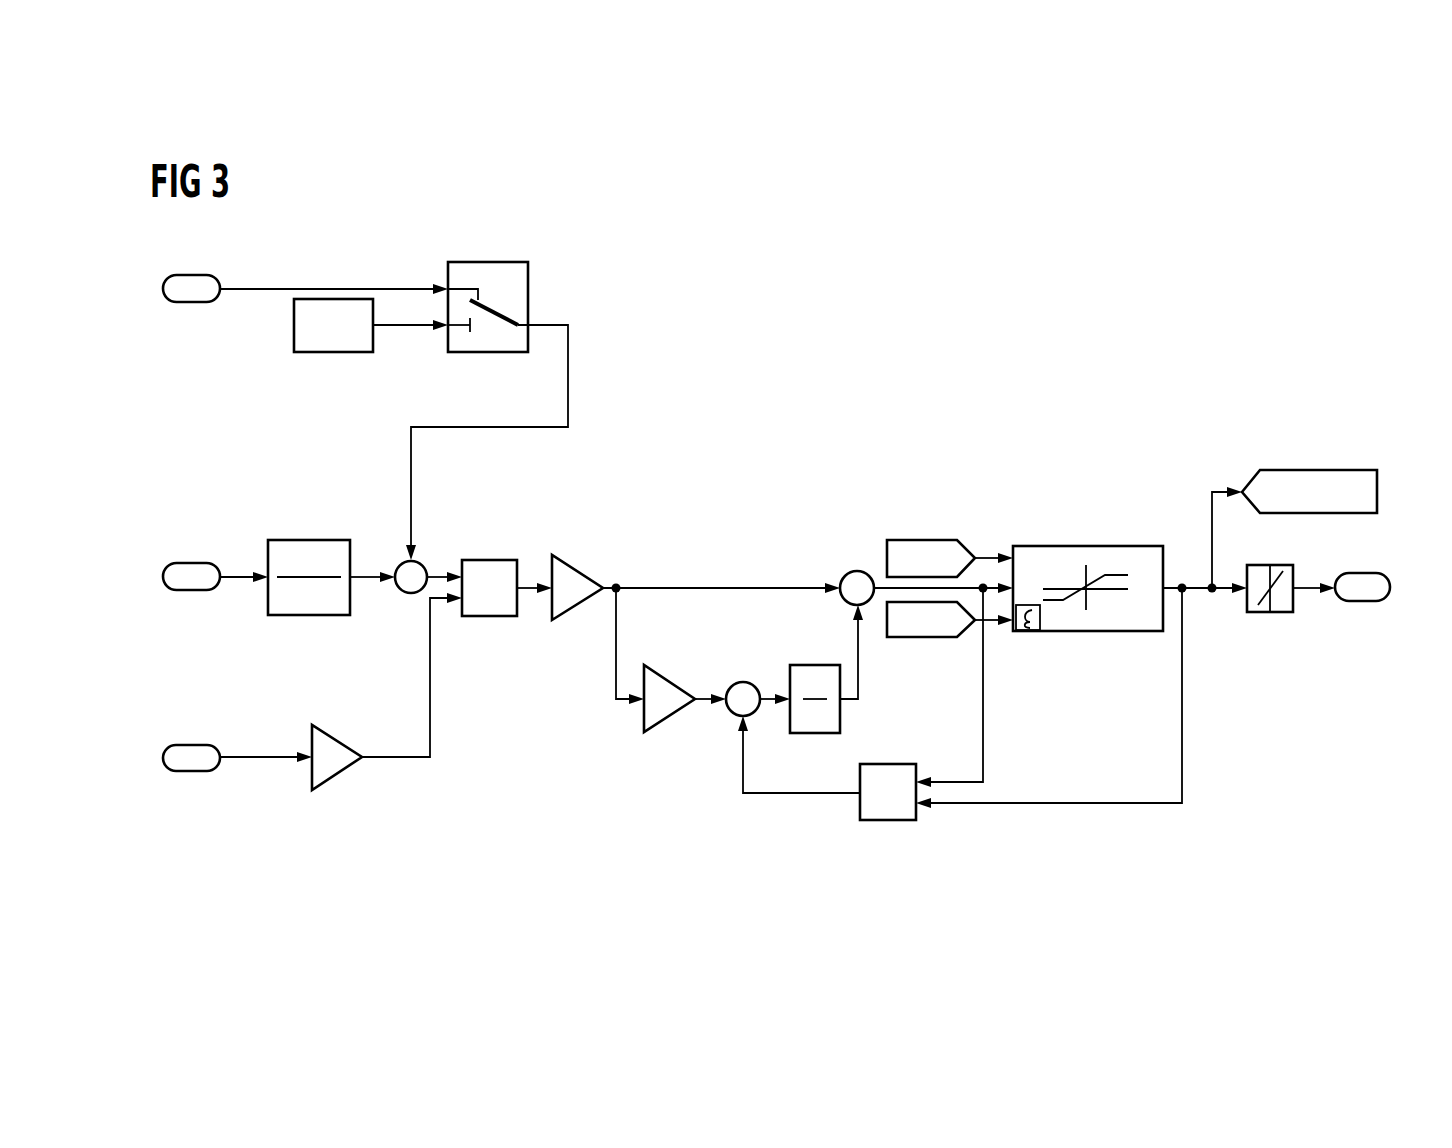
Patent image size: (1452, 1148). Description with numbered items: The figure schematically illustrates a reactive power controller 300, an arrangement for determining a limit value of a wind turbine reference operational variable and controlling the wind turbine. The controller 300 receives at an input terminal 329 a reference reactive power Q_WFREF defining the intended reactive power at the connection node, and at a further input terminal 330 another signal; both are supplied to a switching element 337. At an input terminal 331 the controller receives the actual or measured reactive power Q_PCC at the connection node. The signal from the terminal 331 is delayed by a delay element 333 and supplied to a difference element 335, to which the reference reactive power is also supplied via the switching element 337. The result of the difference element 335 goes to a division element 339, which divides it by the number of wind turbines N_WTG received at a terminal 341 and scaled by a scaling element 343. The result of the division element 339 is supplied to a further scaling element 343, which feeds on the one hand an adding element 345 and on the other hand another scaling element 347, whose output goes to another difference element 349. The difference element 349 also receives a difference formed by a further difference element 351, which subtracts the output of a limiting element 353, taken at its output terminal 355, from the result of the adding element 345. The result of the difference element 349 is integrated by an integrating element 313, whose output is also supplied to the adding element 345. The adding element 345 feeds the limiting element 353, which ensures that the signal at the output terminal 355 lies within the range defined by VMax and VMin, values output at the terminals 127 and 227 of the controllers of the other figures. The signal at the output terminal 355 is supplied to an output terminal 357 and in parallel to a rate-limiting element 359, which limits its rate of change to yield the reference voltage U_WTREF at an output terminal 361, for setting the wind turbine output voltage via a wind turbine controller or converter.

The reactive power controller 300 is at (1270, 288).
The input terminal 329 is at (191, 272).
The input terminal 330 is at (334, 354).
The switching element 337 is at (486, 262).
The input terminal 331 is at (191, 562).
The delay element 333 is at (308, 540).
The difference element 335 is at (412, 597).
The division element 339 is at (490, 560).
The terminal 341 is at (191, 744).
The scaling element 343 is at (343, 734).
The adding element 345 is at (862, 570).
The scaling element 347 is at (644, 718).
The difference element 349 is at (745, 682).
The integrating element 313 is at (815, 665).
The difference element 351 is at (887, 764).
The limiting element 353 is at (1092, 546).
The output terminal 355 is at (1172, 586).
The output terminal 357 is at (1242, 490).
The rate-limiting element 359 is at (1262, 614).
The output terminal 361 is at (1337, 576).
The terminal 127 is at (925, 524).
The terminal 227 is at (925, 651).